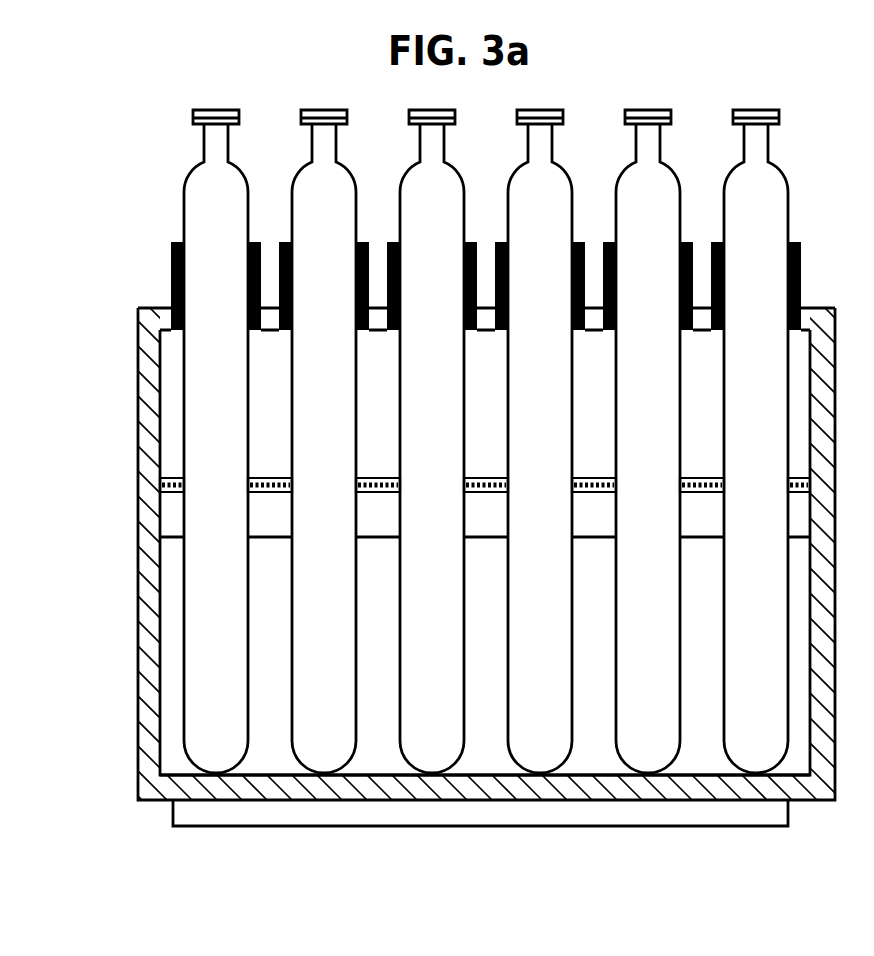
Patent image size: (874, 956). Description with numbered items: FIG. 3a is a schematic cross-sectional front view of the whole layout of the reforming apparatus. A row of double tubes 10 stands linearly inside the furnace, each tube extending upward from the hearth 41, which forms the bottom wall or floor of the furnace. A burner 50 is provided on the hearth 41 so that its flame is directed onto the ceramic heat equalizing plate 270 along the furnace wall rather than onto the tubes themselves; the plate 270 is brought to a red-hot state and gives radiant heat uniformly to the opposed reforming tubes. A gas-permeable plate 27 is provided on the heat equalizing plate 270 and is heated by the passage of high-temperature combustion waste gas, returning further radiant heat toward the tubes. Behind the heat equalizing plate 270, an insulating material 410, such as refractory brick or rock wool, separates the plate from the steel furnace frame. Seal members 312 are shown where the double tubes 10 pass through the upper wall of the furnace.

The double tube 10 is at (188, 176).
The vial seal 312 is at (171, 266).
The gas-permeable plate 27 is at (268, 478).
The heat equalizing plate 270 is at (172, 575).
The insulating material 410 is at (138, 660).
The hearth 41 is at (172, 787).
The burner 50 is at (288, 812).